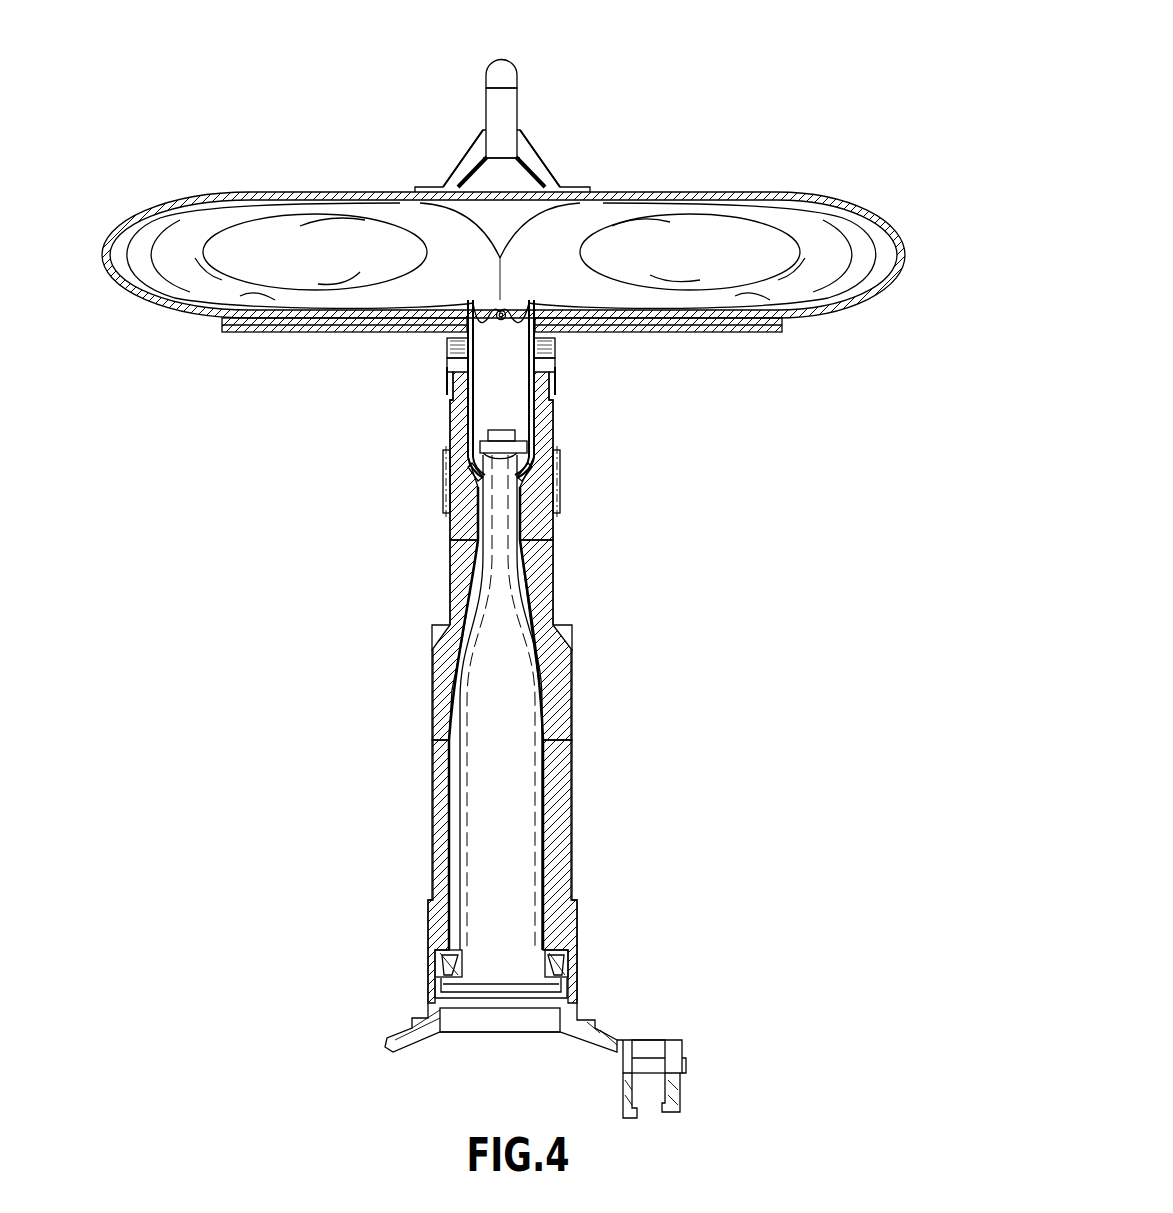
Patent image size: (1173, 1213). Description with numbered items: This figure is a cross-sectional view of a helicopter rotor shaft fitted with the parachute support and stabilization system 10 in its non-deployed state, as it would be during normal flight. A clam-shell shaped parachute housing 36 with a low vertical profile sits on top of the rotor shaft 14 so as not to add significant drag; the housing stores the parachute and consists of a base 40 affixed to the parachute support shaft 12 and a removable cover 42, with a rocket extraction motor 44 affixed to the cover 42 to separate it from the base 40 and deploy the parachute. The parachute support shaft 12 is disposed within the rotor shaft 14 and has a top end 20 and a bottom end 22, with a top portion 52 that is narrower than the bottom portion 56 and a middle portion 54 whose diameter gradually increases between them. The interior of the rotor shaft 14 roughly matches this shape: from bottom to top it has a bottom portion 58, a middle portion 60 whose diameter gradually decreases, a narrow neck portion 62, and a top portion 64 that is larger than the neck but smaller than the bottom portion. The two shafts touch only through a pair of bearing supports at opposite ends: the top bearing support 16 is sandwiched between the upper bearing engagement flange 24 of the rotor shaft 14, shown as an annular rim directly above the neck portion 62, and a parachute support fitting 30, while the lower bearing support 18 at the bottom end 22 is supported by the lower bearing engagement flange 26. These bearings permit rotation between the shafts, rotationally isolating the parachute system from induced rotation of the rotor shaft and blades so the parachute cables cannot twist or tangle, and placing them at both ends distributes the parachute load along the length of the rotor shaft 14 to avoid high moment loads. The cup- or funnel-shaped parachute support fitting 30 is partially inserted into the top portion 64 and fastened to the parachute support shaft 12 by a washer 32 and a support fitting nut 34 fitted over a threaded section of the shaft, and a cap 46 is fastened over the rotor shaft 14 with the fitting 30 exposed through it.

The parachute support and stabilization system 10 is at (768, 115).
The parachute support shaft 12 is at (528, 778).
The rotor shaft 14 is at (573, 870).
The top bearing support 16 is at (530, 474).
The lower bearing support 18 is at (575, 970).
The top end 20 is at (490, 428).
The bottom end 22 is at (573, 984).
The upper bearing engagement flange 24 is at (450, 502).
The lower bearing engagement flange 26 is at (568, 960).
The parachute support fitting 30 is at (462, 381).
The washer 32 is at (560, 455).
The support fitting nut 34 is at (548, 424).
The parachute housing 36 is at (820, 196).
The base 40 is at (840, 316).
The removable cover 42 is at (874, 219).
The rocket extraction motor 44 is at (535, 153).
The cap 46 is at (556, 347).
The top portion 52 is at (475, 522).
The middle portion 54 is at (534, 640).
The bottom portion 56 is at (546, 743).
The bottom portion 58 is at (559, 823).
The middle portion 60 is at (554, 693).
The narrow neck portion 62 is at (525, 520).
The top portion 64 is at (452, 360).